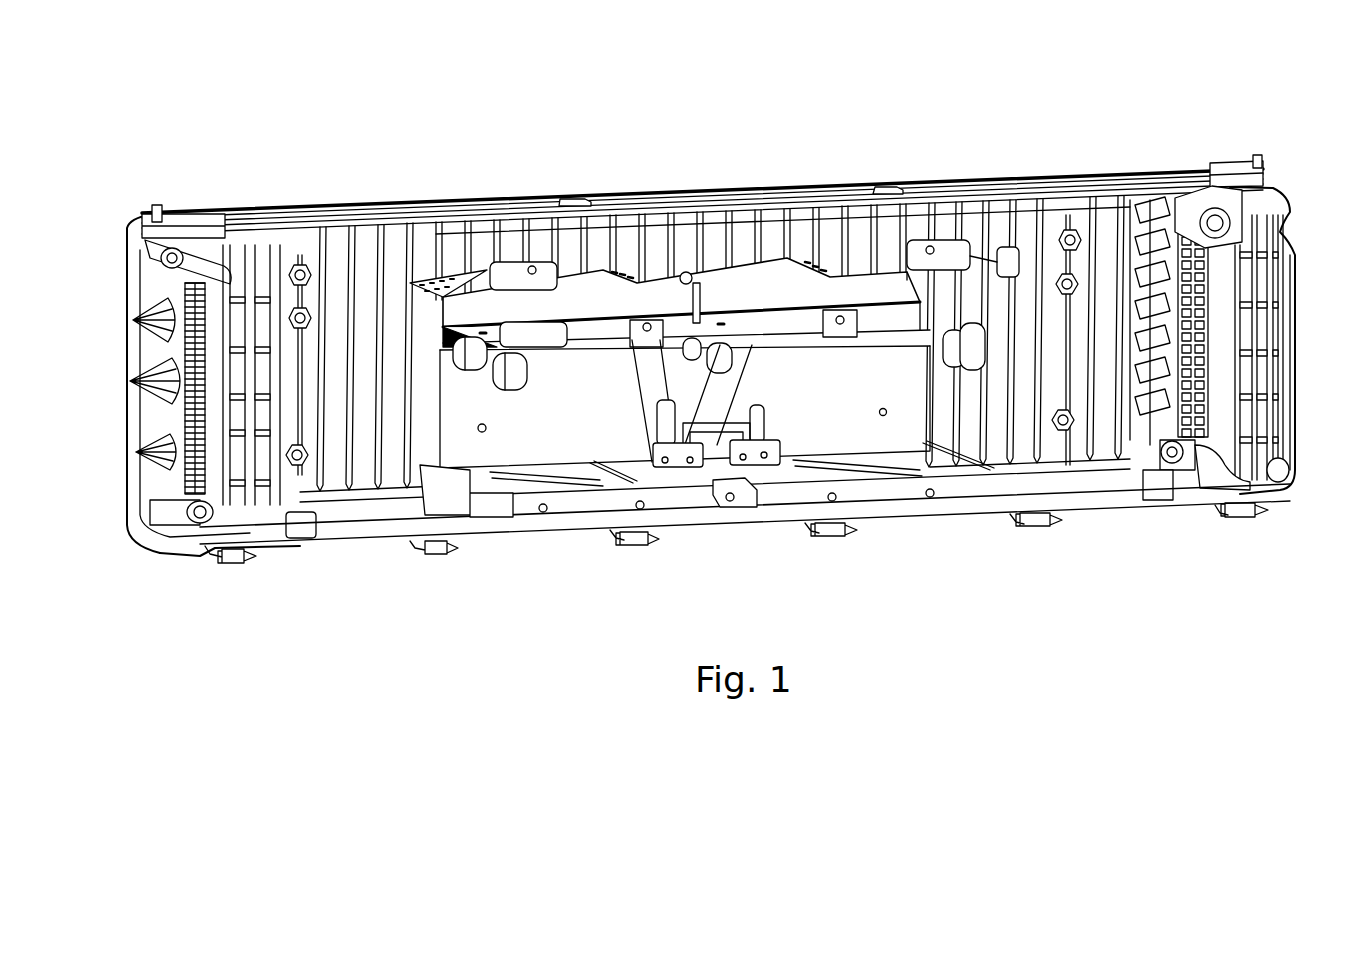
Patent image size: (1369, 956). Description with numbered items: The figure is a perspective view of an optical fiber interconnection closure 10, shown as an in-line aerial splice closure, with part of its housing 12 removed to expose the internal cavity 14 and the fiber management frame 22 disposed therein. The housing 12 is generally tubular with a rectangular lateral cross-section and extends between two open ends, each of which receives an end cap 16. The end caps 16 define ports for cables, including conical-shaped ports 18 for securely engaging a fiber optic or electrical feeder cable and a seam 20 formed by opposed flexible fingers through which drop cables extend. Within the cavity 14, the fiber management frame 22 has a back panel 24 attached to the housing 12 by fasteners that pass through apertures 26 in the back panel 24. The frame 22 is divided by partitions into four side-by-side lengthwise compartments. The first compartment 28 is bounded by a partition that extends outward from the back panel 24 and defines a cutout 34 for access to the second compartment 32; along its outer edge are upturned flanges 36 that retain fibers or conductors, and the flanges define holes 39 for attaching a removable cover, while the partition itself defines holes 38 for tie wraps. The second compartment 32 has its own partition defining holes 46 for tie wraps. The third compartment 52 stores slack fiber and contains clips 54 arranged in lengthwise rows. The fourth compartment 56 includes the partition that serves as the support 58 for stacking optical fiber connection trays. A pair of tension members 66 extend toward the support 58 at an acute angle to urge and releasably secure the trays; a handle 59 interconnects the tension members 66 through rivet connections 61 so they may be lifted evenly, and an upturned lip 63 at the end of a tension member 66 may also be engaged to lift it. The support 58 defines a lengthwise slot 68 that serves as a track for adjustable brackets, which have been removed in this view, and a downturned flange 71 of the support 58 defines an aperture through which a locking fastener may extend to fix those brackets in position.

The optical fiber interconnection closure 10 is at (1092, 119).
The housing 12 is at (777, 190).
The internal cavity 14 is at (1057, 453).
The end caps 16 is at (180, 430).
The conical-shaped ports 18 is at (145, 360).
The seam 20 is at (213, 449).
The fiber management frame 22 is at (964, 392).
The back panel 24 is at (857, 420).
The apertures 26 is at (887, 415).
The first compartment 28 is at (474, 256).
The second compartment 32 is at (470, 314).
The cutout 34 is at (748, 277).
The upturned flanges 36 is at (960, 250).
The holes 38 is at (585, 272).
The holes 39 is at (930, 245).
The holes 46 is at (723, 331).
The third compartment 52 is at (430, 355).
The clips 54 is at (507, 375).
The fourth compartment 56 is at (548, 455).
The support 58 is at (593, 480).
The handle 59 is at (763, 402).
The rivet connections 61 is at (652, 450).
The upturned lip 63 is at (775, 432).
The tension members 66 is at (645, 385).
The slot 68 is at (597, 487).
The downturned flange 71 is at (742, 500).